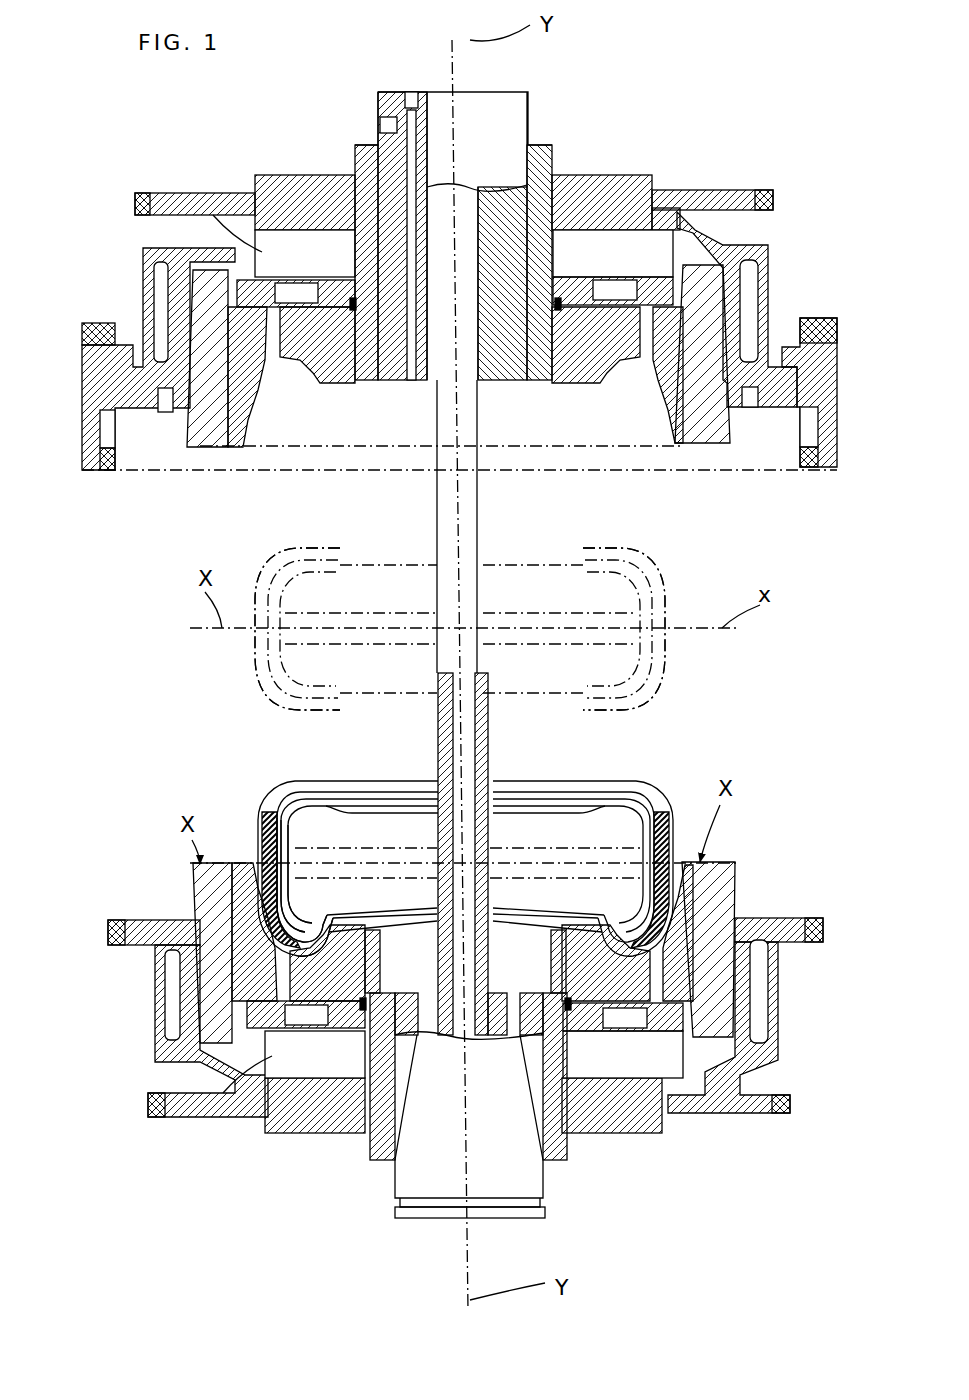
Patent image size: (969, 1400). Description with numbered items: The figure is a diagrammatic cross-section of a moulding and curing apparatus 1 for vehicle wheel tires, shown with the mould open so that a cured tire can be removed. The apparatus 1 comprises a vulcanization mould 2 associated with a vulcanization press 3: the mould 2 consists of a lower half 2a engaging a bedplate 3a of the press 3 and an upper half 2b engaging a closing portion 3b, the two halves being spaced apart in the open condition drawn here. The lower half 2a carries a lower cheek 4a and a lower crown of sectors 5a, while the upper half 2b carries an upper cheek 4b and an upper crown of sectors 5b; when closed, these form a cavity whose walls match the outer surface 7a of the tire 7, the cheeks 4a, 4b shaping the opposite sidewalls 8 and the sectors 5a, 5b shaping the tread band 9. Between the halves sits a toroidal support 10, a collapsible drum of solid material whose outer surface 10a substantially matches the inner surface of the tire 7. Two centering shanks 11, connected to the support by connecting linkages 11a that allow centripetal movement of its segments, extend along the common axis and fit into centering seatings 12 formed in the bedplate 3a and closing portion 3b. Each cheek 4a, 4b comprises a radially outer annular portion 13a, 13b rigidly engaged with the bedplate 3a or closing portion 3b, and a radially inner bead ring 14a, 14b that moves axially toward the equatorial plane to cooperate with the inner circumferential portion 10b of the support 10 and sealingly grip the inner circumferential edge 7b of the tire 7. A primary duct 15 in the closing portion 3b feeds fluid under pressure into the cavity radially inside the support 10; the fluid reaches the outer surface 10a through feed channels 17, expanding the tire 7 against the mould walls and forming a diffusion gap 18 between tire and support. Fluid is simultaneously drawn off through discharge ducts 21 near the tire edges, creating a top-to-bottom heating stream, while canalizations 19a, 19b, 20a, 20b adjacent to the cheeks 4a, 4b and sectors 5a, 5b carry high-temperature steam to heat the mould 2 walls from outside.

The moulding and curing apparatus 1 is at (735, 100).
The vulcanization mould 2 is at (202, 458).
The lower half of mould 2a is at (742, 866).
The upper half of mould 2b is at (712, 455).
The vulcanization press 3 is at (775, 463).
The bedplate 3a is at (788, 998).
The closing portion 3b is at (775, 252).
The lower cheek 4a is at (365, 960).
The upper cheek 4b is at (300, 320).
The lower crown of sectors 5a is at (726, 860).
The upper crown of sectors 5b is at (672, 450).
The tire 7 is at (672, 585).
The outer surface of tire 7a is at (633, 790).
The inner circumferential edge of tire 7b is at (410, 805).
The sidewall 8 is at (558, 795).
The tread band 9 is at (662, 822).
The toroidal support 10 is at (320, 570).
The outer surface of toroidal support 10a is at (262, 585).
The inner circumferential portion of toroidal support 10b is at (552, 812).
The centering shank 11 is at (490, 692).
The connecting linkage 11a is at (352, 815).
The centering seating 12 is at (480, 380).
The radially outer annular portion of lower cheek 13a is at (632, 985).
The radially outer annular portion of upper cheek 13b is at (292, 336).
The lower bead ring 14a is at (605, 1010).
The upper bead ring 14b is at (565, 340).
The primary duct 15 is at (412, 375).
The feed channel 17 is at (285, 800).
The diffusion gap 18 is at (290, 903).
The canalization 19a is at (305, 1020).
The canalization 19b is at (618, 298).
The canalization 20a is at (766, 1030).
The canalization 20b is at (752, 306).
The discharge duct 21 is at (395, 1165).